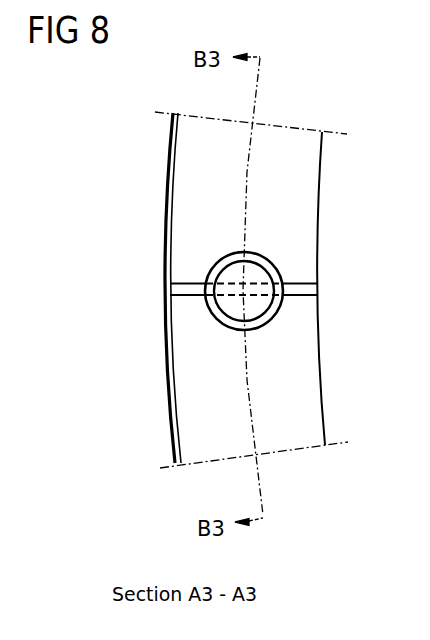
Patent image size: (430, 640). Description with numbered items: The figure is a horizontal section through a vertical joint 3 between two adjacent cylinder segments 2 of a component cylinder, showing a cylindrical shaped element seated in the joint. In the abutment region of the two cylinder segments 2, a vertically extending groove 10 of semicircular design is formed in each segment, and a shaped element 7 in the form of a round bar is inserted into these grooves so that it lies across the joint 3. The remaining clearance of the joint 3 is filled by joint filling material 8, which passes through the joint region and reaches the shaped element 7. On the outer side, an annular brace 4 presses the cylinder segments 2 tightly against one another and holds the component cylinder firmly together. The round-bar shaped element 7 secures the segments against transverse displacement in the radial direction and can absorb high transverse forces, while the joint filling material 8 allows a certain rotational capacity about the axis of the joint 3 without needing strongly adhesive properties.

The cylinder segment 2 is at (214, 180).
The joint 3 is at (330, 289).
The annular brace 4 is at (167, 216).
The shaped element 7 is at (258, 276).
The joint filling material 8 is at (205, 272).
The groove 10 is at (265, 255).